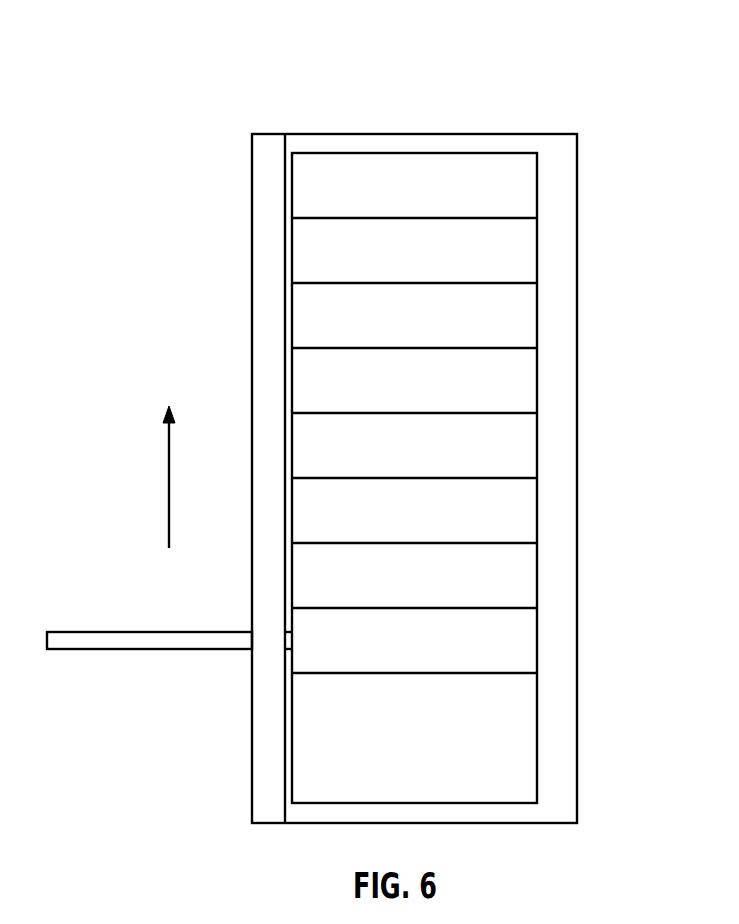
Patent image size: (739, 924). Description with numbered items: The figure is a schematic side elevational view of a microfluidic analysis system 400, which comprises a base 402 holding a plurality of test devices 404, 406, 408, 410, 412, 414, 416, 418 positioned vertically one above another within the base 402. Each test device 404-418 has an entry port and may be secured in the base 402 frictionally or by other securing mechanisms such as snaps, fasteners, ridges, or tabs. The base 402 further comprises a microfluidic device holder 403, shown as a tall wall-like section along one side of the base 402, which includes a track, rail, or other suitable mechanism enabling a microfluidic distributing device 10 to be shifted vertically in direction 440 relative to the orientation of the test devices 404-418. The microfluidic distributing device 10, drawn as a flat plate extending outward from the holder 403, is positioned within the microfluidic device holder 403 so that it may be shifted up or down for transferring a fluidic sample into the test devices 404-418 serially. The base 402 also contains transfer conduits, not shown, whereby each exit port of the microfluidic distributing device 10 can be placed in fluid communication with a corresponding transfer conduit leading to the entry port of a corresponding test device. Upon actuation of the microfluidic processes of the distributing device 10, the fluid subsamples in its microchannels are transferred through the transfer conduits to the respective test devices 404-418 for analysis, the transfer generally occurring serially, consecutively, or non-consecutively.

The microfluidic analysis system 400 is at (220, 70).
The base 402 is at (578, 425).
The microfluidic device holder 403 is at (252, 235).
The test device 404 is at (537, 186).
The test device 406 is at (537, 250).
The test device 408 is at (537, 315).
The test device 410 is at (537, 380).
The test device 412 is at (537, 445).
The test device 414 is at (537, 512).
The test device 416 is at (537, 575).
The test device 418 is at (537, 640).
The direction 440 is at (168, 477).
The microfluidic distributing device 10 is at (172, 632).